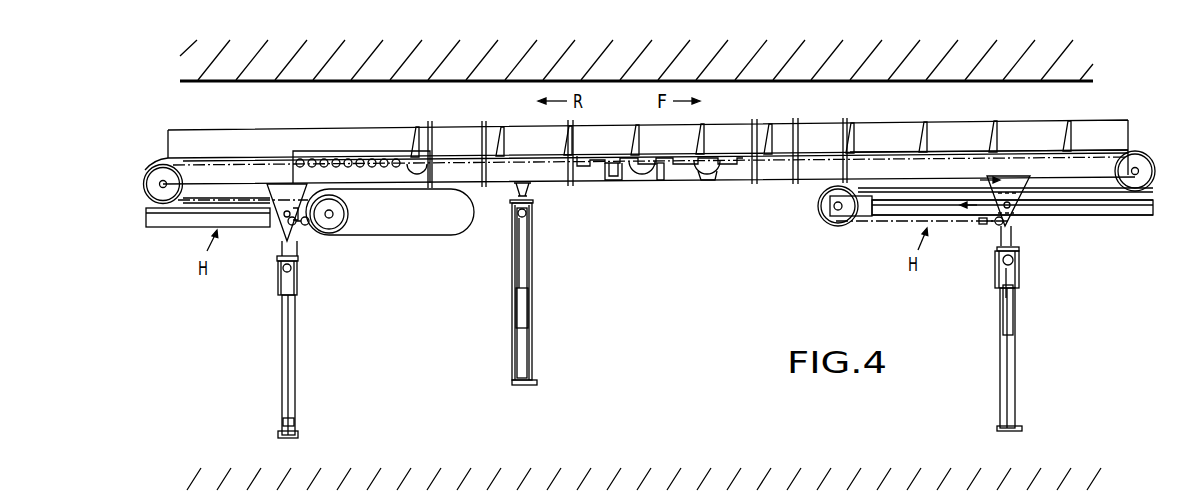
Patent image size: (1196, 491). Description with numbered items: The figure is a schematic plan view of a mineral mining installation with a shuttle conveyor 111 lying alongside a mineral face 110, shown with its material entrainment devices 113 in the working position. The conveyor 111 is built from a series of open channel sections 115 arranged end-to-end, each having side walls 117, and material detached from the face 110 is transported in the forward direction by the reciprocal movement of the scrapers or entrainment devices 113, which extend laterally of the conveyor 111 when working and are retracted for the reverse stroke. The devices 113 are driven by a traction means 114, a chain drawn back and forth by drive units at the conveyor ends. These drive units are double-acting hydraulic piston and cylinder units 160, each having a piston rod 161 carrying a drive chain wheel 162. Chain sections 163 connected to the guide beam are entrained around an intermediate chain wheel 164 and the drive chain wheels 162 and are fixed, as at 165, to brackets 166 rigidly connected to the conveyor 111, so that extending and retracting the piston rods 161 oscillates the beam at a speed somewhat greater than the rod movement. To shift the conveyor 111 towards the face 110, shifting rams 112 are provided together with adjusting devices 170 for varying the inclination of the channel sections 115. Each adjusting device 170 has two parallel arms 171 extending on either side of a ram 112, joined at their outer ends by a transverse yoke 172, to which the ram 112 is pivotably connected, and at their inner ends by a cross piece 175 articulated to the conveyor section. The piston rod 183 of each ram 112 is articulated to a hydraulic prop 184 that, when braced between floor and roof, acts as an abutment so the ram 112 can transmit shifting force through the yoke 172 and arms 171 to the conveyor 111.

The mineral face 110 is at (294, 74).
The shuttle conveyor 111 is at (1099, 103).
The shifting ram 112 is at (285, 358).
The entrainment devices 113 is at (555, 130).
The traction means 114 is at (674, 162).
The channel sections 115 is at (444, 126).
The side walls 117 is at (1012, 143).
The double-acting hydraulic piston and cylinder units 160 is at (242, 207).
The piston rod 161 is at (887, 215).
The drive chain wheel 162 is at (325, 217).
The chain sections 163 is at (184, 192).
The intermediate chain wheel 164 is at (147, 166).
The fixing point 165 is at (285, 222).
The brackets 166 is at (1027, 225).
The adjusting devices 170 is at (260, 355).
The parallel arms 171 is at (502, 345).
The transverse yoke 172 is at (524, 377).
The cross piece 175 is at (527, 193).
The piston rod 183 is at (512, 259).
The hydraulic prop 184 is at (524, 208).